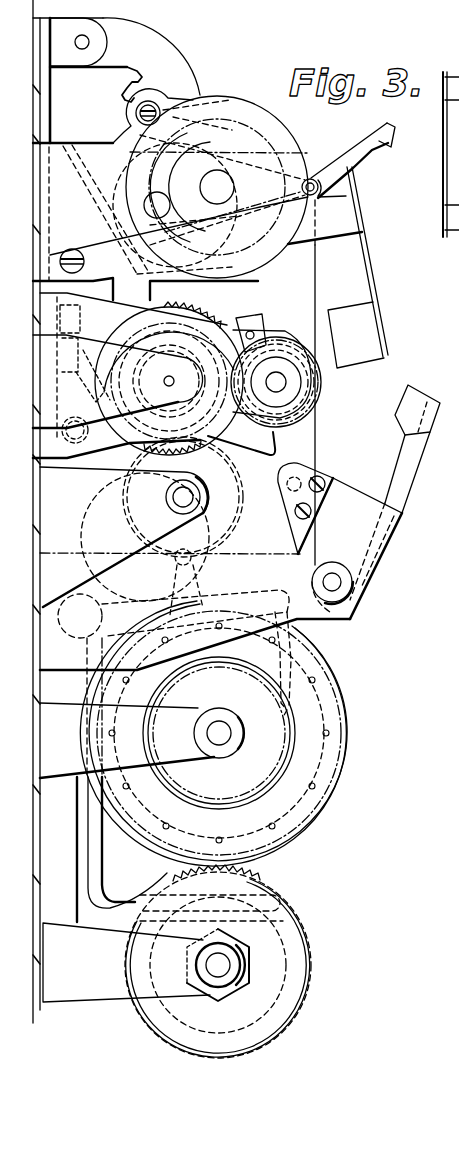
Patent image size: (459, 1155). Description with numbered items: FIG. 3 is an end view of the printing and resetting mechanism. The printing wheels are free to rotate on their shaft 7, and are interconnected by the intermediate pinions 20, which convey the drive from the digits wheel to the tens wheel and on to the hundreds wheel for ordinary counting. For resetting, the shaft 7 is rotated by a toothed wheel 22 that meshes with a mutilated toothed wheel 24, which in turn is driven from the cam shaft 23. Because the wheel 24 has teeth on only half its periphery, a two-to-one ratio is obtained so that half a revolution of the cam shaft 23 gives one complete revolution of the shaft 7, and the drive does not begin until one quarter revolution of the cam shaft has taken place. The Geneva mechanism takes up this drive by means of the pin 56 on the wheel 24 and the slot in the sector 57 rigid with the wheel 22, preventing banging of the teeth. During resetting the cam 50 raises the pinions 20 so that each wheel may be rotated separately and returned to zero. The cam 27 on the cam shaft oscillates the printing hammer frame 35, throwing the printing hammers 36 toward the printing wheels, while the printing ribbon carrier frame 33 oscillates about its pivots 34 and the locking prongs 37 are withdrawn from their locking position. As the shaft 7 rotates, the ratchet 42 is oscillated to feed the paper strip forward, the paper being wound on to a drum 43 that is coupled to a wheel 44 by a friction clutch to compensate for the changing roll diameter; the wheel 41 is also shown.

The shaft 7 is at (282, 374).
The intermediate pinions 20 is at (255, 340).
The toothed wheel 22 is at (288, 350).
The cam shaft 23 is at (182, 498).
The mutilated toothed wheel 24 is at (203, 310).
The cam 27 is at (105, 509).
The printing ribbon carrier frame 33 is at (330, 224).
The pivots 34 is at (72, 249).
The printing hammer frame 35 is at (378, 558).
The printing hammers 36 is at (413, 458).
The locking prongs 37 is at (283, 452).
The wheel 41 is at (322, 723).
The ratchet 42 is at (318, 642).
The drum 43 is at (266, 957).
The wheel 44 is at (309, 984).
The cam 50 is at (325, 384).
The pin 56 is at (241, 326).
The sector 57 is at (285, 397).